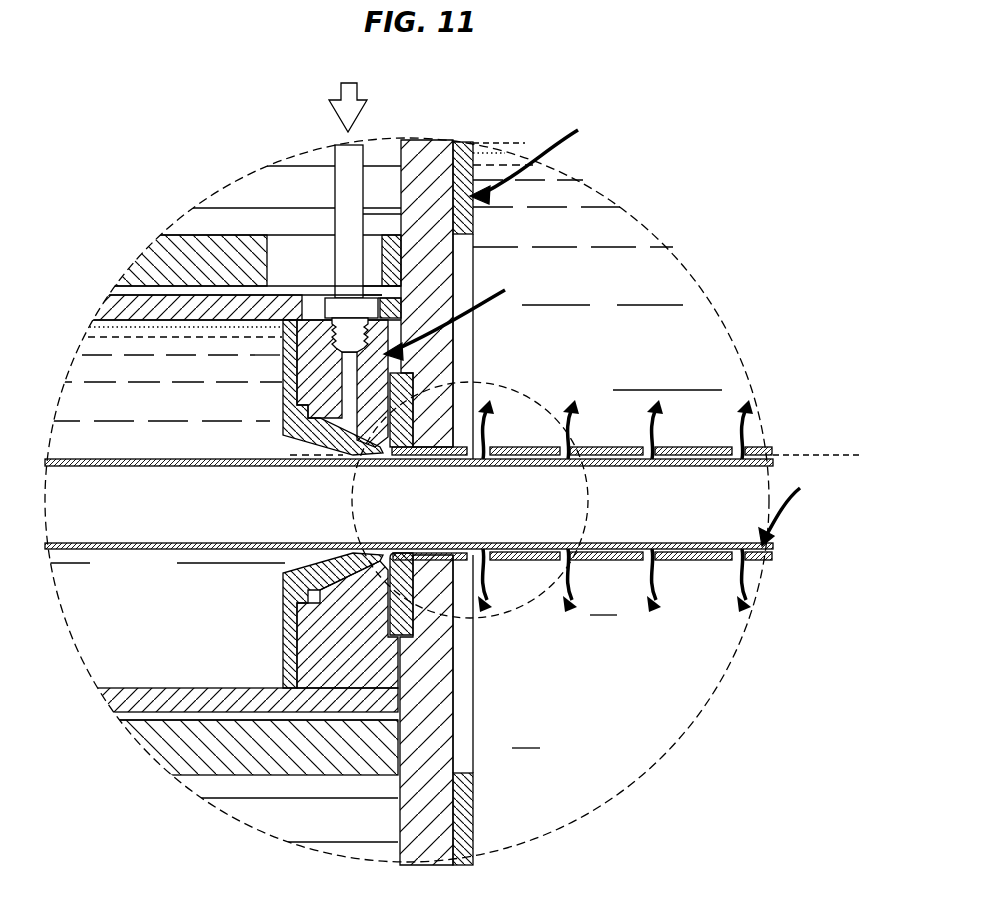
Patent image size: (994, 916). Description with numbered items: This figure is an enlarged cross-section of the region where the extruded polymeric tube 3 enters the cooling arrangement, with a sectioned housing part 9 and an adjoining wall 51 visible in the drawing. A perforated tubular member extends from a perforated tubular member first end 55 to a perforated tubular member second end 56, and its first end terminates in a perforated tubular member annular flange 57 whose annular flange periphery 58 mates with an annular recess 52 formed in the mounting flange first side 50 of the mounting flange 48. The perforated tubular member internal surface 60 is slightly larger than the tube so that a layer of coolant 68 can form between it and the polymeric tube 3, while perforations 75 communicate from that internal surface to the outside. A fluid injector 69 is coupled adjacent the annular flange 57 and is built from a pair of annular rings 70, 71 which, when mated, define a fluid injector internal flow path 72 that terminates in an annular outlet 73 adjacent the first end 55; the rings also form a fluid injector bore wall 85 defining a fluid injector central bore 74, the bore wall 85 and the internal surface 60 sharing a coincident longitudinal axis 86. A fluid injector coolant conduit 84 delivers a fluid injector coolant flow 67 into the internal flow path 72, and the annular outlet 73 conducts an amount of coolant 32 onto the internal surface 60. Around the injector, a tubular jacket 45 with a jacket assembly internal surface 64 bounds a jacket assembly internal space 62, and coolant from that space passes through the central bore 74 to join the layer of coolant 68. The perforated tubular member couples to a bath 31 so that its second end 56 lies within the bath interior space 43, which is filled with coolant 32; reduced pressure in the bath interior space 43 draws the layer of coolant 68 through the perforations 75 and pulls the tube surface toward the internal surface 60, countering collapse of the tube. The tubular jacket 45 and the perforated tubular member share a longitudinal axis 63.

The pipe 9 is at (176, 510).
The fluid injector coolant conduit 84 is at (335, 178).
The fluid injector coolant flow 67 is at (806, 503).
The mounting flange first side 50 is at (400, 157).
The mounting flange 48 is at (427, 153).
The housing wall 51 is at (463, 147).
The bath 31 is at (533, 155).
The coolant 32 is at (628, 232).
The fluid injector 69 is at (455, 313).
The annular ring 70 is at (285, 365).
The annular ring 71 is at (315, 383).
The fluid injector internal flow path 72 is at (320, 414).
The annular outlet 73 is at (383, 455).
The coincident longitudinal axis 86 is at (302, 457).
The fluid injector bore wall 85 is at (377, 460).
The fluid injector central bore 74 is at (372, 547).
The jacket assembly internal space 62 is at (162, 612).
The bath interior space 43 is at (630, 705).
The jacket assembly internal surface 64 is at (122, 687).
The tubular jacket 45 is at (157, 702).
The annular recess 52 is at (413, 397).
The perforated tubular member first end 55 is at (435, 448).
The perforations 75 is at (640, 447).
The perforated tubular member internal surface 60 is at (678, 447).
The perforated tubular member second end 56 is at (757, 447).
The layer of coolant 68 is at (775, 453).
The longitudinal axis 63 is at (818, 503).
The polymeric tube 3 is at (785, 508).
The perforated tubular member annular flange 57 is at (417, 628).
The perforated tubular member annular flange periphery 58 is at (397, 637).